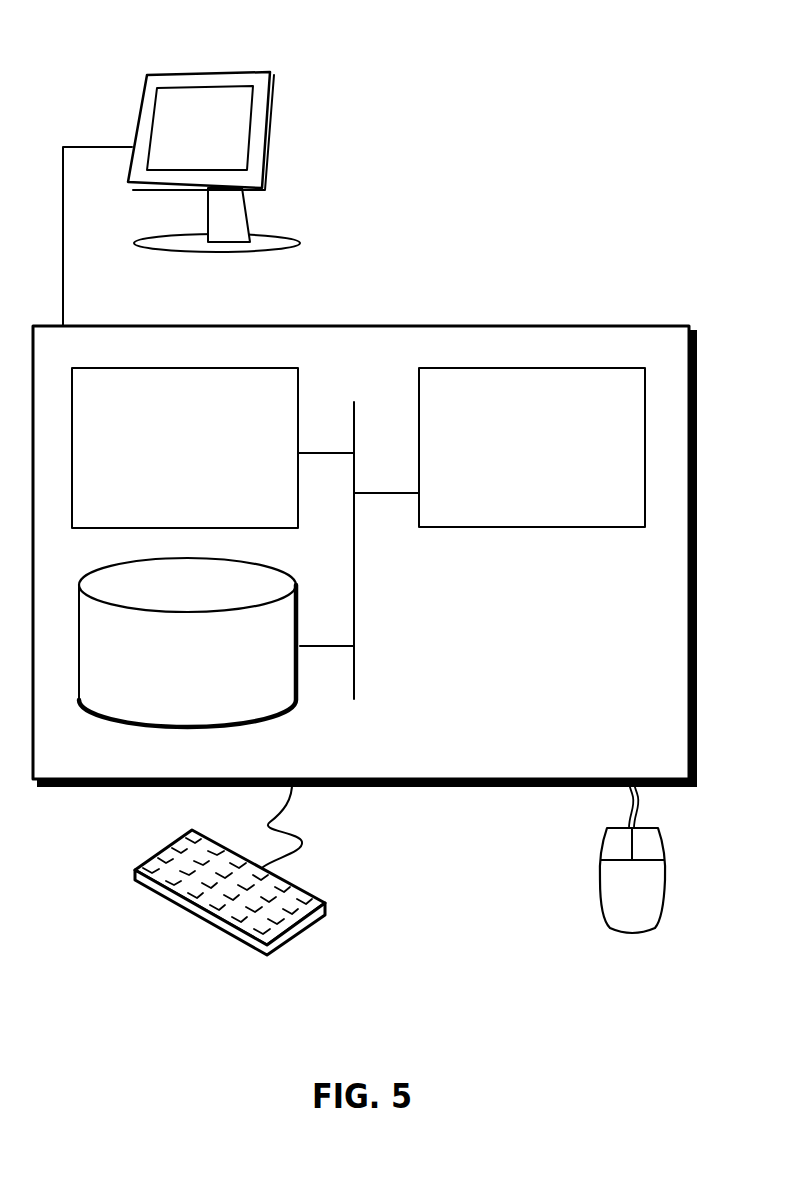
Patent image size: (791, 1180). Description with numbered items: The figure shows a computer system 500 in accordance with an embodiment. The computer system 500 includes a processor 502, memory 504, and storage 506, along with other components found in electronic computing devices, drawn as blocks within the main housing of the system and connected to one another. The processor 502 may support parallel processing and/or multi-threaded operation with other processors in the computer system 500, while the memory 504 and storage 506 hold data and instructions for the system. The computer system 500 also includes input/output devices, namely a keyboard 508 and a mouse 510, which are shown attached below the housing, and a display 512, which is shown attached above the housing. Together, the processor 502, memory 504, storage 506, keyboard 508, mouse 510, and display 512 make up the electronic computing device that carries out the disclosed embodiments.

The computer system 500 is at (408, 305).
The processor 502 is at (514, 460).
The memory 504 is at (164, 459).
The storage 506 is at (171, 670).
The keyboard 508 is at (155, 888).
The mouse 510 is at (653, 902).
The display 512 is at (181, 199).